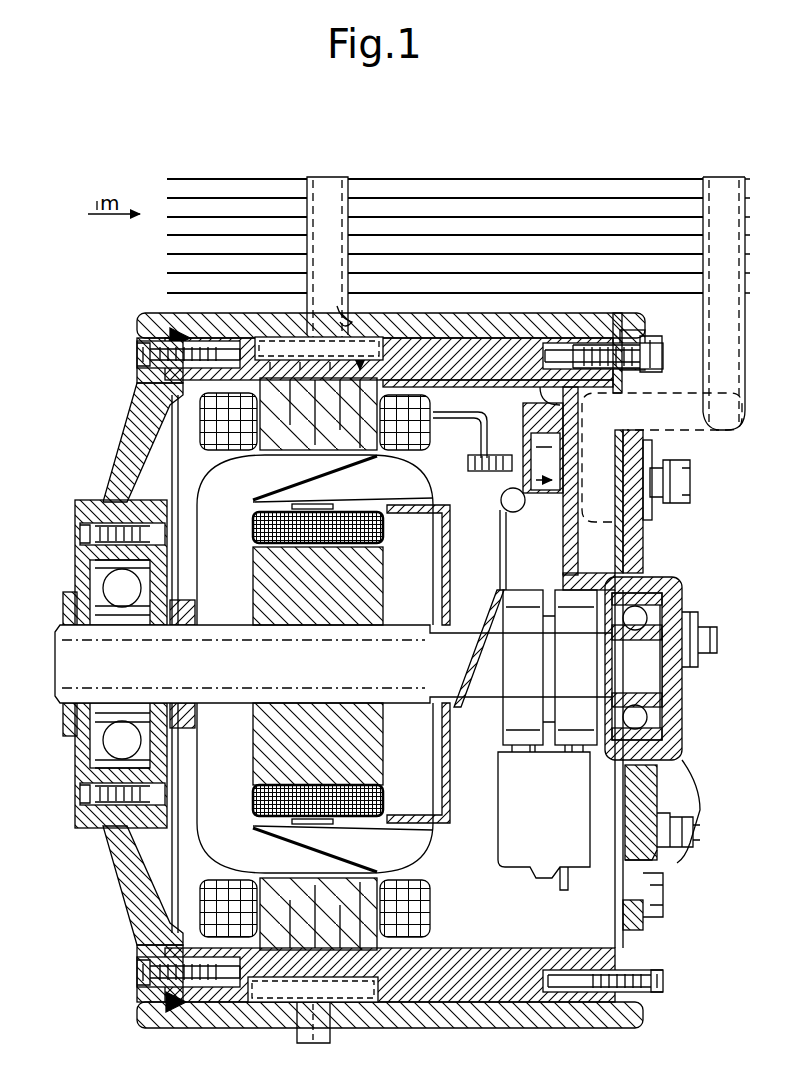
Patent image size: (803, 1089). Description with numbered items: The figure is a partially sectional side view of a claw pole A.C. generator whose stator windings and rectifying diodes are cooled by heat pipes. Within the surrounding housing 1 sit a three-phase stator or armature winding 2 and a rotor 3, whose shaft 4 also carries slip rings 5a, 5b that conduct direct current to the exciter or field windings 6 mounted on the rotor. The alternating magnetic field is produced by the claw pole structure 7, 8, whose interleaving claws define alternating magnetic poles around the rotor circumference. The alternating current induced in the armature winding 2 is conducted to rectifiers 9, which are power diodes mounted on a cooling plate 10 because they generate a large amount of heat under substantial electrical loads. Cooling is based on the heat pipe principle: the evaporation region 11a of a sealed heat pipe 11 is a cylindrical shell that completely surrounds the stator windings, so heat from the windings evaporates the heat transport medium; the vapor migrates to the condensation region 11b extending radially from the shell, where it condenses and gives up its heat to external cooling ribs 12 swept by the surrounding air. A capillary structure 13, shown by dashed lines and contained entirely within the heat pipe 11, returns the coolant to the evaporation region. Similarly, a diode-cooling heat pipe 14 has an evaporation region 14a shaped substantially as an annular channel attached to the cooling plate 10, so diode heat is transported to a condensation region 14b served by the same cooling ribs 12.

The housing 1 is at (518, 982).
The stator winding 2 is at (278, 440).
The rotor 3 is at (240, 762).
The shaft 4 is at (299, 668).
The slip ring 5a is at (536, 644).
The slip ring 5b is at (586, 644).
The exciter or field winding 6 is at (272, 803).
The claw pole structure 7 is at (229, 576).
The claw pole structure 8 is at (416, 578).
The rectifier 9 is at (530, 453).
The cooling plate 10 is at (536, 412).
The heat pipe 11 is at (300, 318).
The evaporation region 11a is at (363, 348).
The condensation region 11b is at (322, 203).
The cooling ribs 12 is at (420, 212).
The capillary structure 13 is at (337, 302).
The diode-cooling heat pipe 14 is at (707, 414).
The evaporation region 14a is at (590, 504).
The condensation region 14b is at (720, 180).